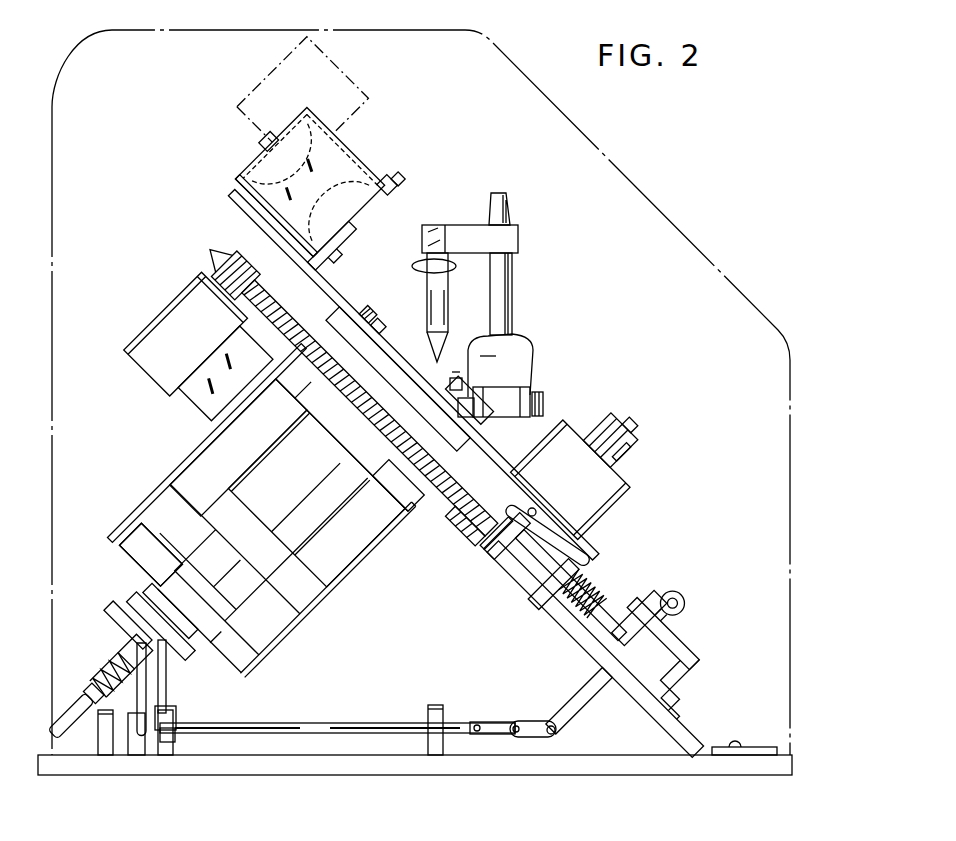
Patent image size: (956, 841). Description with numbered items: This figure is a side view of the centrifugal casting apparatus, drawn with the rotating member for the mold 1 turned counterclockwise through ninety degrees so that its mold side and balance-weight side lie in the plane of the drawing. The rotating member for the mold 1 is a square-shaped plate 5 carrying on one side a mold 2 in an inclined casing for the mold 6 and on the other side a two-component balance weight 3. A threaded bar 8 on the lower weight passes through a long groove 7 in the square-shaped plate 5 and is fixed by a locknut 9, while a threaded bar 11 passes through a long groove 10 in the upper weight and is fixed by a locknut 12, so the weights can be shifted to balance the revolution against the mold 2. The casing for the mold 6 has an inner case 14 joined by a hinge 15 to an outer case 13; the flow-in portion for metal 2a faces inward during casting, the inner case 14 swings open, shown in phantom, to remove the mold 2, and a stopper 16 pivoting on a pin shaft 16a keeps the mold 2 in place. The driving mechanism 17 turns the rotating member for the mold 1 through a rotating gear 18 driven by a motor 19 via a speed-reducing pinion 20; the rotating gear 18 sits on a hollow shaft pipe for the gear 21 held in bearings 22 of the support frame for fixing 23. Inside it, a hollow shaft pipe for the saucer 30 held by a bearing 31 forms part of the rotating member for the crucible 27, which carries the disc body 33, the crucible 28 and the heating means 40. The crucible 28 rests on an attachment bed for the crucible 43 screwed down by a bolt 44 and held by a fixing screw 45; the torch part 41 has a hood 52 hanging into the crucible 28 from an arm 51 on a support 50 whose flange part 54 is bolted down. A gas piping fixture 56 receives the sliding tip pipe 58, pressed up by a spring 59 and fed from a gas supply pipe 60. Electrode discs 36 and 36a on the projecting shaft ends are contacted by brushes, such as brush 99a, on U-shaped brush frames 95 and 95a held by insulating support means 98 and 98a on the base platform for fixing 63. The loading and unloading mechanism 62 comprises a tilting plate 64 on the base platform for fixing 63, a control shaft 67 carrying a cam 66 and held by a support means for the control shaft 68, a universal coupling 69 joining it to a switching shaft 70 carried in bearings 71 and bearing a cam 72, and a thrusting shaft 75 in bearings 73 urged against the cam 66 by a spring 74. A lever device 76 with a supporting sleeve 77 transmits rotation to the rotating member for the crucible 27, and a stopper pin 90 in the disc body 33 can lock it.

The rotating member for the mold 1 is at (285, 181).
The mold 2 is at (348, 242).
The flow-in portion for metal 2a is at (352, 236).
The balance weight 3 is at (619, 468).
The square-shaped plate 5 is at (253, 210).
The casing for the mold 6 is at (240, 178).
The long groove 7 is at (590, 547).
The threaded bar 8 is at (576, 523).
The locknut 9 is at (476, 490).
The long groove 10 is at (632, 455).
The threaded bar 11 is at (634, 432).
The locknut 12 is at (640, 440).
The outer case 13 is at (352, 262).
The inner case 14 is at (343, 130).
The hinge 15 is at (266, 142).
The stopper 16 is at (387, 192).
The pin shaft 16a is at (396, 190).
The driving mechanism 17 is at (201, 268).
The rotating gear 18 is at (279, 300).
The motor 19 is at (165, 312).
The pinion 20 is at (250, 270).
The hollow shaft pipe for the gear 21 is at (287, 450).
The bearings 22 is at (290, 388).
The support frame for fixing 23 is at (180, 467).
The rotating member for the crucible 27 is at (368, 302).
The crucible 28 is at (539, 345).
The hollow shaft pipe for the saucer 30 is at (187, 560).
The bearing 31 is at (135, 543).
The disc body 33 is at (380, 314).
The electrode disc 36 is at (130, 600).
The electrode disc 36a is at (118, 615).
The heating means 40 is at (489, 317).
The torch part 41 is at (486, 252).
The attachment bed for the crucible 43 is at (516, 417).
The bolt 44 is at (458, 376).
The fixing screw 45 is at (544, 404).
The support 50 is at (414, 266).
The arm 51 is at (478, 226).
The hood 52 is at (512, 272).
The flange part of the support 54 is at (418, 340).
The gas piping fixture 56 is at (92, 673).
The sliding tip pipe 58 is at (123, 643).
The spring 59 is at (105, 663).
The gas supply pipe 60 is at (71, 706).
The loading and unloading mechanism 62 is at (539, 576).
The base platform for fixing 63 is at (515, 776).
The tilting plate 64 is at (631, 690).
The cam 66 is at (618, 632).
The control shaft 67 is at (591, 680).
The support means for the control shaft 68 is at (696, 653).
The universal coupling 69 is at (546, 722).
The switching shaft 70 is at (318, 720).
The bearings 71 is at (105, 757).
The cam 72 is at (176, 735).
The bearings 73 is at (498, 556).
The spring 74 is at (590, 585).
The thrusting shaft 75 is at (625, 606).
The lever device 76 is at (466, 524).
The supporting sleeve 77 is at (441, 500).
The stopper pin 90 is at (473, 417).
The brush frame 95 is at (147, 700).
The brush frame 95a is at (160, 710).
The insulating support means 98 is at (168, 757).
The insulating support means 98a is at (138, 757).
The brush 99a is at (150, 655).